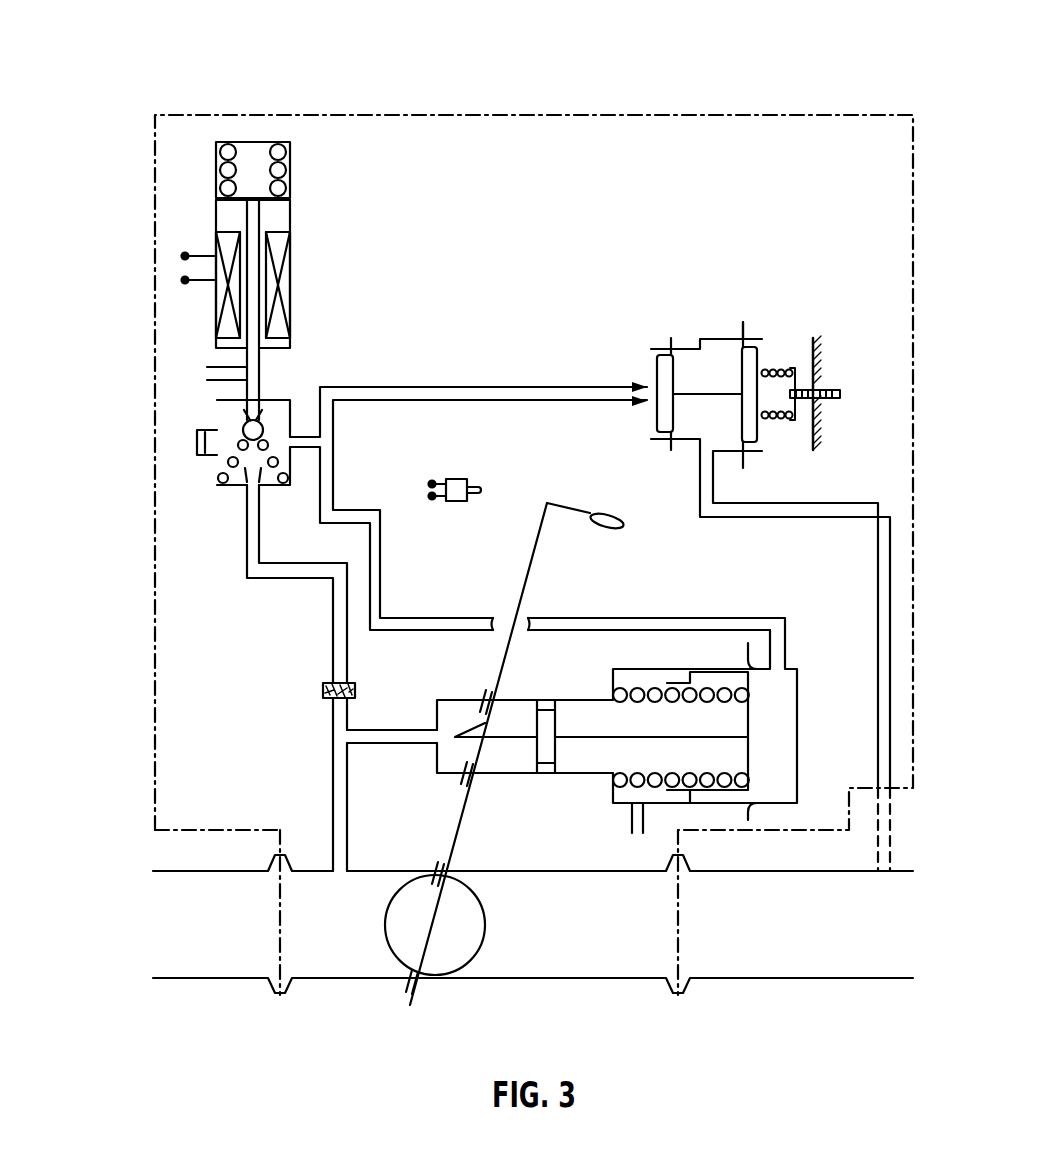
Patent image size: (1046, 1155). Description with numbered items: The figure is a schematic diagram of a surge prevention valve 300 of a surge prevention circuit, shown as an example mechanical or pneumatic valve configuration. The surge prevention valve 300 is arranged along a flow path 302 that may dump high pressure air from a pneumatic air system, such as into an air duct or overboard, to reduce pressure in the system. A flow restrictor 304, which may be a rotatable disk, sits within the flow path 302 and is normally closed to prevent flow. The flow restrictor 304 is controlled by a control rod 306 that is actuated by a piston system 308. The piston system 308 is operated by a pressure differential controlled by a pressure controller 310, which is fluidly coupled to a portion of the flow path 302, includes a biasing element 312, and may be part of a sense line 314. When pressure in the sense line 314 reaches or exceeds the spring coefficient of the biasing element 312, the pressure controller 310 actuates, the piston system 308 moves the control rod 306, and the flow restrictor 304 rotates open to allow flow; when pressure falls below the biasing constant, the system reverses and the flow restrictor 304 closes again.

The surge prevention valve 300 is at (163, 64).
The flow path 302 is at (572, 980).
The flow restrictor 304 is at (472, 922).
The control rod 306 is at (460, 832).
The piston system 308 is at (583, 786).
The pressure controller 310 is at (688, 318).
The biasing element 312 is at (770, 372).
The sense line 314 is at (886, 880).